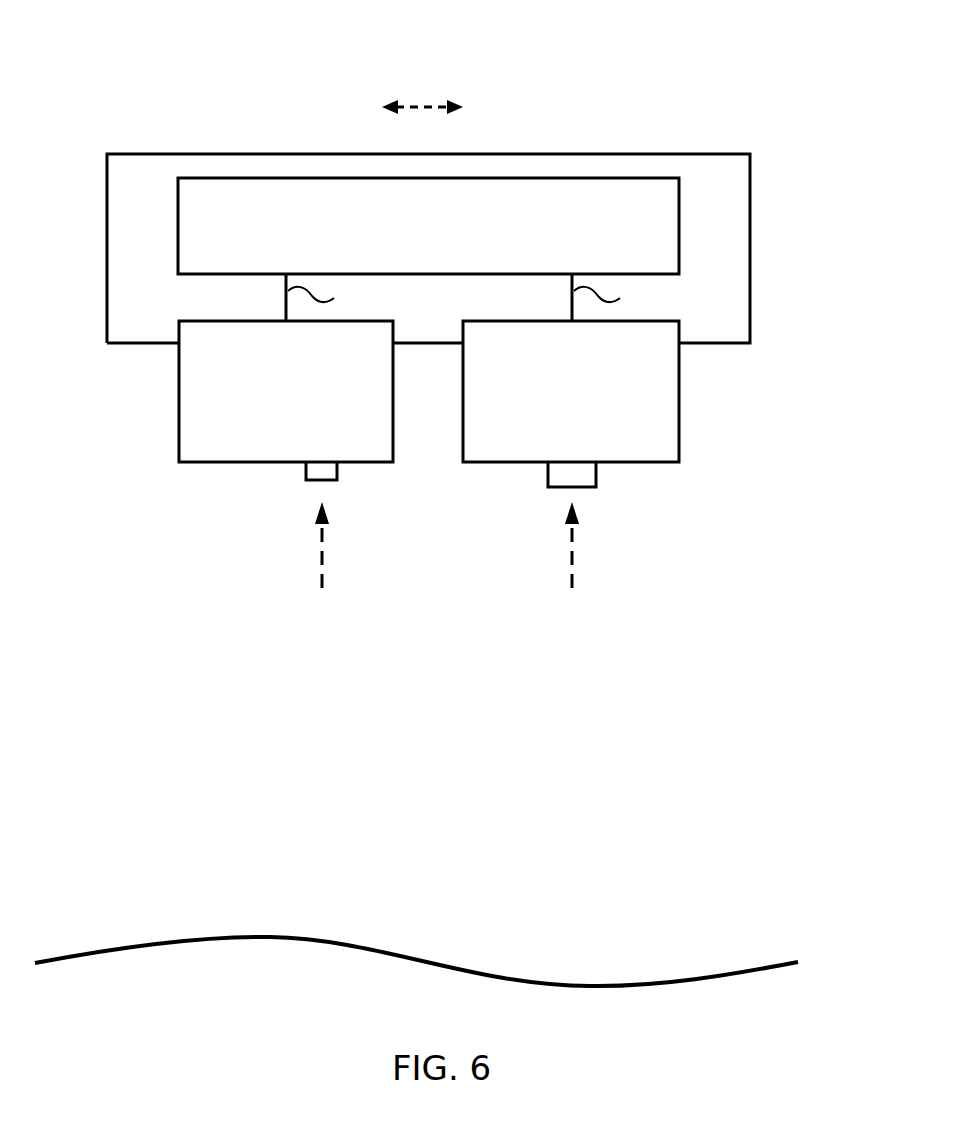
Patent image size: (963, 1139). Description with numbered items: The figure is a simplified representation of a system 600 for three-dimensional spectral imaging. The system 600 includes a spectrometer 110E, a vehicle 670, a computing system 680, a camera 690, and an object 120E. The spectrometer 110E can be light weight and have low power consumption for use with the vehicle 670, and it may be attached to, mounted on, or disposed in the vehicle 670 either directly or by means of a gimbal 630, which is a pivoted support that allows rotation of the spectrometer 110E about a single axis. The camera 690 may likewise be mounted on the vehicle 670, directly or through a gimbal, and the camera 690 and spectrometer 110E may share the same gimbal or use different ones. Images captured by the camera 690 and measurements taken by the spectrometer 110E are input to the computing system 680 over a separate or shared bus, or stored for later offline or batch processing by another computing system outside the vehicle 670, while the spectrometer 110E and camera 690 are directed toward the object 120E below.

The system 600 is at (138, 46).
The gimbal 630 is at (425, 104).
The vehicle 670 is at (751, 154).
The computing system 680 is at (453, 239).
The spectrometer 110E is at (252, 405).
The camera 690 is at (596, 404).
The object 120E is at (195, 938).